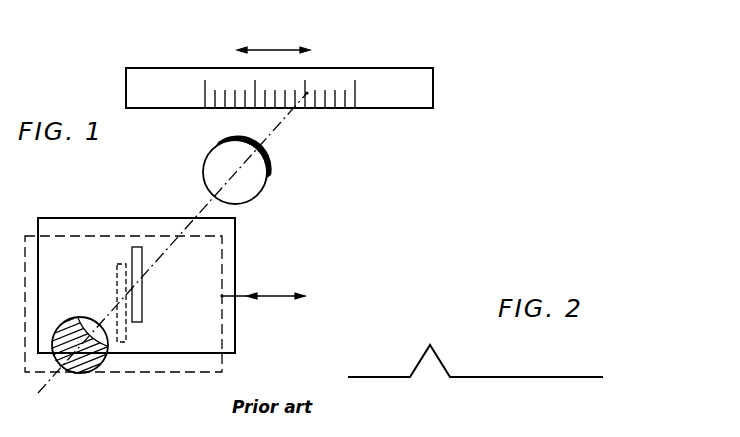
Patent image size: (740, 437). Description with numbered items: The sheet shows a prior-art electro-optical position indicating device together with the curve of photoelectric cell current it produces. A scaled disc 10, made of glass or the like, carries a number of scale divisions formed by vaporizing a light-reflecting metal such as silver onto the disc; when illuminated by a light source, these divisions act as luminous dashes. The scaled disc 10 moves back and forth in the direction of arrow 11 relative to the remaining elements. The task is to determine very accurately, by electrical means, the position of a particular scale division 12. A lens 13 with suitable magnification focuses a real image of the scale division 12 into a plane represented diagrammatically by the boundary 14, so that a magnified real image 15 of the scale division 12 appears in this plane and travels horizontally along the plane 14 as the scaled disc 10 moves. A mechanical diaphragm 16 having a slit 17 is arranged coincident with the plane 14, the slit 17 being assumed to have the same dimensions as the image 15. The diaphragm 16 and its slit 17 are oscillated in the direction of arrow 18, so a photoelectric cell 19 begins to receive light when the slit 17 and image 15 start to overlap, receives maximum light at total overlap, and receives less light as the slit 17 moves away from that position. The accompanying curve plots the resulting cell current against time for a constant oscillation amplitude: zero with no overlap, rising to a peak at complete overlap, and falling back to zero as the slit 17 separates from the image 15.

The scaled disc 10 is at (412, 99).
The arrow 11 is at (273, 42).
The scale division 12 is at (356, 88).
The lens 13 is at (258, 188).
The plane 14 is at (235, 241).
The magnified real image 15 is at (142, 296).
The mechanical diaphragm 16 is at (220, 280).
The slit 17 is at (127, 336).
The arrow 18 is at (278, 297).
The photoelectric cell 19 is at (90, 375).